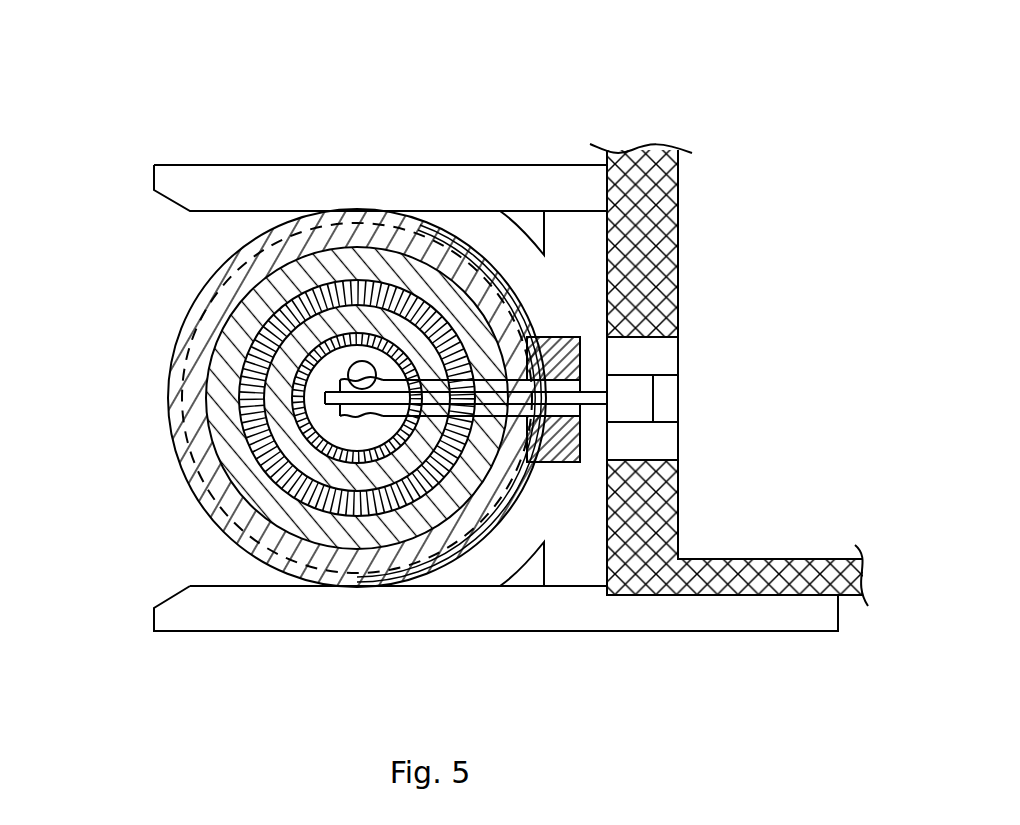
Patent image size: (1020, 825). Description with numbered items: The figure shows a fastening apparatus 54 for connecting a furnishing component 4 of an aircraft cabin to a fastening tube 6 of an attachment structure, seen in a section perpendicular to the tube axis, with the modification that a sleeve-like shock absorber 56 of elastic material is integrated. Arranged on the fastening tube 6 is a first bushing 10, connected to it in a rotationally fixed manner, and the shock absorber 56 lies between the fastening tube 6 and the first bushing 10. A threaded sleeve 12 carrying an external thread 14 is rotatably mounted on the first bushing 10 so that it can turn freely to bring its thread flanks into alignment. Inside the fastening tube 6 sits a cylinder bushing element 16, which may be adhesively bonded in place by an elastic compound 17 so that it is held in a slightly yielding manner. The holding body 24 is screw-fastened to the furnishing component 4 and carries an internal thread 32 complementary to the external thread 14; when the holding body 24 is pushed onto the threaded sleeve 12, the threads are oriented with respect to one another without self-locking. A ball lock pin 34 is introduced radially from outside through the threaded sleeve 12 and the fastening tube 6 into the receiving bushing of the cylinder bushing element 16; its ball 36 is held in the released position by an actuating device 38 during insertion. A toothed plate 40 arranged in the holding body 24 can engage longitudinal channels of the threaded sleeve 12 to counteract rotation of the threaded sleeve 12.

The furnishing component 4 is at (680, 237).
The fastening tube 6 is at (372, 578).
The first bushing 10 is at (448, 280).
The threaded sleeve 12 is at (218, 522).
The external thread 14 is at (207, 462).
The cylinder bushing element 16 is at (436, 568).
The elastic compound 17 is at (358, 372).
The holding body 24 is at (583, 618).
The internal thread 32 is at (477, 542).
The ball lock pin 34 is at (515, 484).
The ball 36 is at (300, 290).
The actuating device 38 is at (592, 398).
The toothed plate 40 is at (568, 353).
The fastening apparatus 54 is at (447, 123).
The shock absorber 56 is at (380, 302).